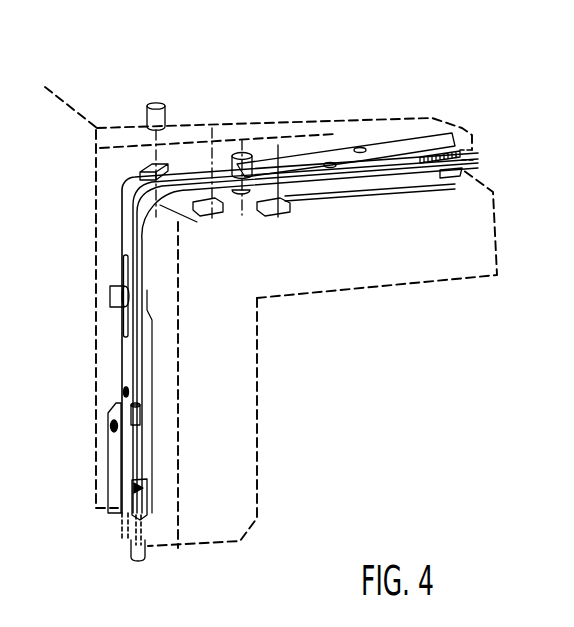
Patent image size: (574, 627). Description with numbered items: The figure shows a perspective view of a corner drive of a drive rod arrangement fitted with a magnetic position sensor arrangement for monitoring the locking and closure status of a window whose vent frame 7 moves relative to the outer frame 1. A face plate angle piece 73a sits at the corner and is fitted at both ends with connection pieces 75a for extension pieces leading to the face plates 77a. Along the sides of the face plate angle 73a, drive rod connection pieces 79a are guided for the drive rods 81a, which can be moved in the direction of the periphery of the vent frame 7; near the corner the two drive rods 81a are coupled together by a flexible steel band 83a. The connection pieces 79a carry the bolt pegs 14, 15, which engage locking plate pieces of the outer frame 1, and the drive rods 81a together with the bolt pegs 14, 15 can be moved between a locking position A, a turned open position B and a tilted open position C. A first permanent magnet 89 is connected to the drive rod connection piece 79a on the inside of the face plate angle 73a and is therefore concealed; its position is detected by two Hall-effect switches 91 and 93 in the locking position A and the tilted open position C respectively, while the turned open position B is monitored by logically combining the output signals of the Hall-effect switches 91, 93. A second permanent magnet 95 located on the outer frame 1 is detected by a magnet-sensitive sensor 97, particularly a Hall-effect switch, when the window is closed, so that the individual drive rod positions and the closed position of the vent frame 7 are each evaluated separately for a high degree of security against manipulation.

The outer frame 1 is at (97, 128).
The vent frame 7 is at (378, 285).
The bolt peg 14 is at (113, 303).
The bolt peg 15 is at (253, 155).
The face plate angle piece 73a is at (122, 215).
The connection piece 75a is at (366, 142).
The face plate 77a is at (460, 133).
The drive rod connection piece 79a is at (403, 183).
The drive rod 81a is at (477, 157).
The flexible steel band 83a is at (147, 217).
The first permanent magnet 89 is at (267, 217).
The Hall-effect switch 91 is at (232, 213).
The Hall-effect switch 93 is at (297, 200).
The second permanent magnet 95 is at (158, 102).
The magnet-sensitive sensor 97 is at (143, 168).
The locking position A is at (210, 137).
The turned open position B is at (242, 150).
The tilted open position C is at (280, 150).